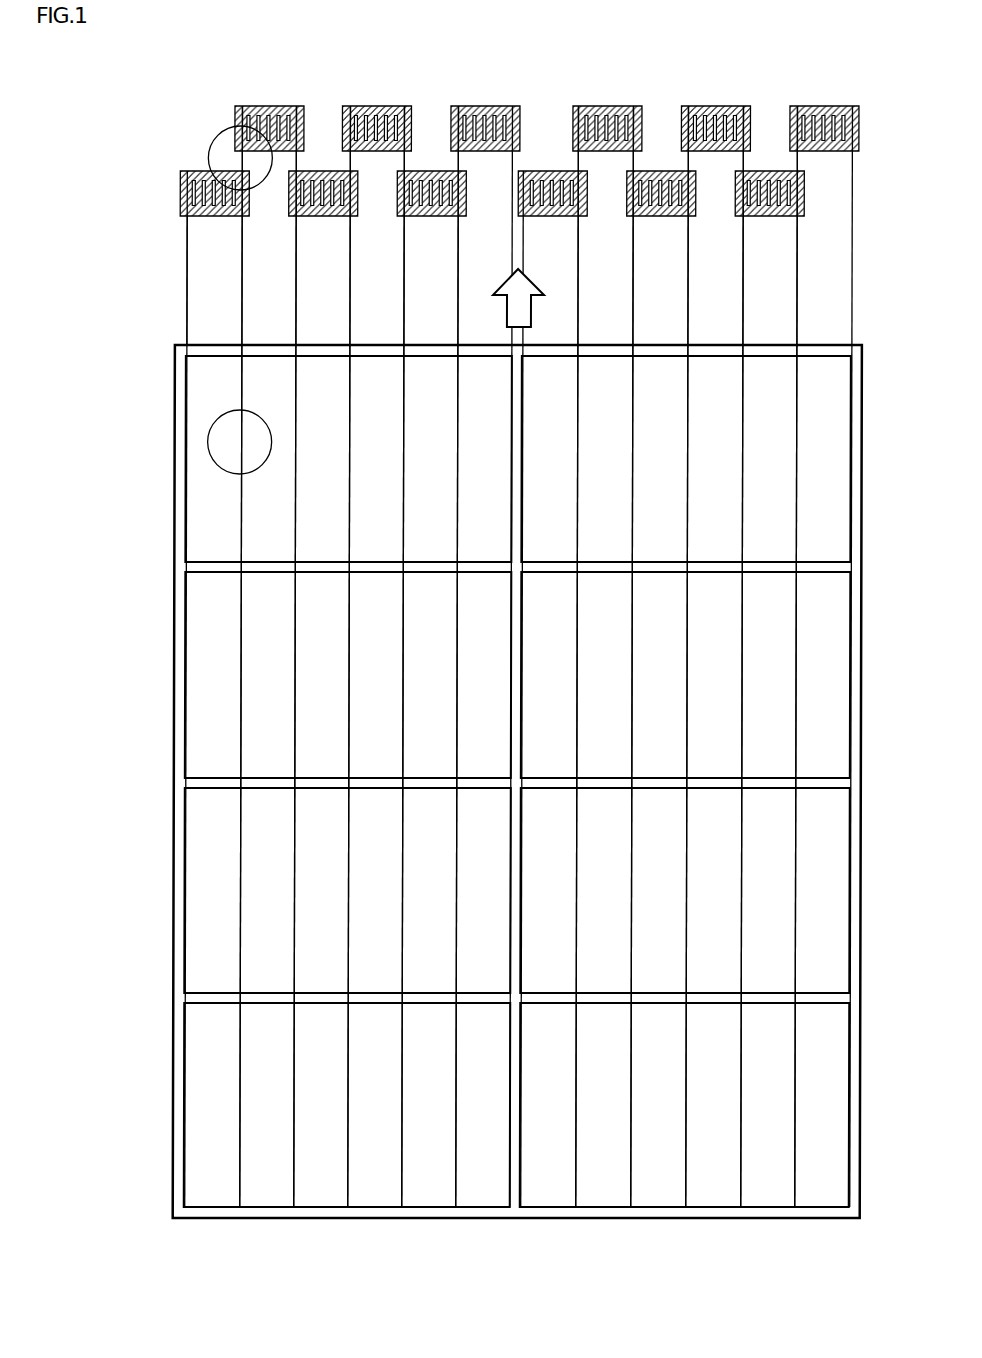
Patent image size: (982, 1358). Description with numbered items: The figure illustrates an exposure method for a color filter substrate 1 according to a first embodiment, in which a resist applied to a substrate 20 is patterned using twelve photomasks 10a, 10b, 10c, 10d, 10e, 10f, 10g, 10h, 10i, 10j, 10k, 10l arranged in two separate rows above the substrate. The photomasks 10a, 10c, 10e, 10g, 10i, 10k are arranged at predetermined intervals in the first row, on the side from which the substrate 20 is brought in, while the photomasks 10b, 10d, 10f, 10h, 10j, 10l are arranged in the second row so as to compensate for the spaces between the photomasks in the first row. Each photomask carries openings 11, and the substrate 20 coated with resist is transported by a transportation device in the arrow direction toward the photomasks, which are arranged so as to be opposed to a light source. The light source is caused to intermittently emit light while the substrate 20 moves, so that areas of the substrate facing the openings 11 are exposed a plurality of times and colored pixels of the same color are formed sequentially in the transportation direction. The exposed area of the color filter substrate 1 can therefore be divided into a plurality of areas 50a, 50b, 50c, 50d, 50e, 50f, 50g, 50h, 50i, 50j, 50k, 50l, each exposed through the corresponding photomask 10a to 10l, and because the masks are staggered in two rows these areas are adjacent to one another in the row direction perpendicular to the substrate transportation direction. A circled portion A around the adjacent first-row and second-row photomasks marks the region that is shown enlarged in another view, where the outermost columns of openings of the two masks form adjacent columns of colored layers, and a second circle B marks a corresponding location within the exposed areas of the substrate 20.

The color filter substrate 1 is at (180, 354).
The substrate 20 is at (175, 725).
The openings 11 is at (164, 280).
The photomask 10a is at (181, 172).
The photomask 10b is at (236, 107).
The photomask 10c is at (290, 216).
The photomask 10d is at (343, 107).
The photomask 10e is at (398, 216).
The photomask 10f is at (452, 107).
The photomask 10g is at (519, 216).
The photomask 10h is at (574, 107).
The photomask 10i is at (628, 216).
The photomask 10j is at (682, 107).
The photomask 10k is at (736, 216).
The photomask 10l is at (791, 107).
The area 50a is at (210, 1199).
The area 50b is at (265, 1199).
The area 50c is at (319, 1199).
The area 50d is at (373, 1199).
The area 50e is at (427, 1199).
The area 50f is at (481, 1199).
The area 50g is at (546, 1199).
The area 50h is at (602, 1199).
The area 50i is at (656, 1199).
The area 50j is at (712, 1199).
The area 50k is at (766, 1199).
The area 50l is at (820, 1199).
The portion A is at (210, 140).
The enlarged region B is at (208, 442).